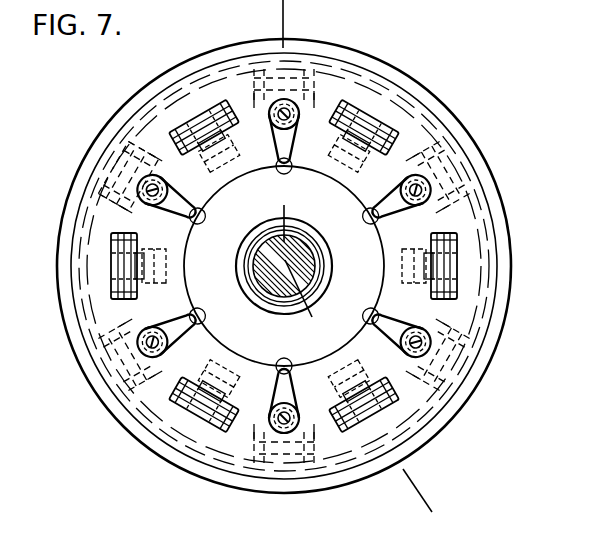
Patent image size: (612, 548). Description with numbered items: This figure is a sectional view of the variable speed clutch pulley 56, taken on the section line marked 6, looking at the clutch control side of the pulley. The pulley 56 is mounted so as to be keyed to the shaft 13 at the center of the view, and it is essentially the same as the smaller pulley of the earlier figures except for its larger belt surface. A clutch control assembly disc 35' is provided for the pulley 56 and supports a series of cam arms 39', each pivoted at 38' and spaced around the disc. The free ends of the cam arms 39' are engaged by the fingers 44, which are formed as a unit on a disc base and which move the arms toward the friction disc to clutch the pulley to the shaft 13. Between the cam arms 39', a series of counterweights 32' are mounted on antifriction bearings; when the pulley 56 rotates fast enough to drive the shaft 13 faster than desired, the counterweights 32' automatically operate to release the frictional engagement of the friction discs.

The shaft 13 is at (257, 266).
The counterweights 32' is at (292, 268).
The clutch control assembly disc 35' is at (308, 266).
The pivot 38' is at (128, 135).
The cam arms 39' is at (283, 266).
The fingers 44 is at (207, 212).
The variable speed clutch pulley 56 is at (493, 331).
The section line 6- 6 is at (240, 15).